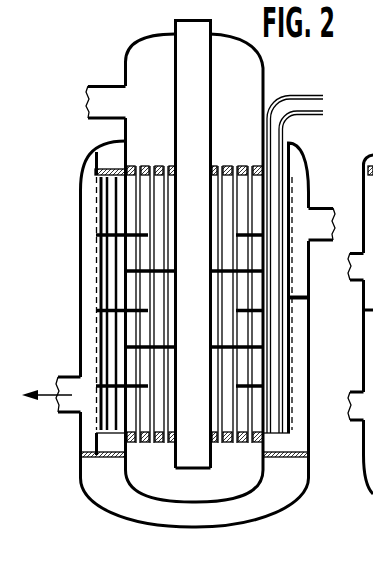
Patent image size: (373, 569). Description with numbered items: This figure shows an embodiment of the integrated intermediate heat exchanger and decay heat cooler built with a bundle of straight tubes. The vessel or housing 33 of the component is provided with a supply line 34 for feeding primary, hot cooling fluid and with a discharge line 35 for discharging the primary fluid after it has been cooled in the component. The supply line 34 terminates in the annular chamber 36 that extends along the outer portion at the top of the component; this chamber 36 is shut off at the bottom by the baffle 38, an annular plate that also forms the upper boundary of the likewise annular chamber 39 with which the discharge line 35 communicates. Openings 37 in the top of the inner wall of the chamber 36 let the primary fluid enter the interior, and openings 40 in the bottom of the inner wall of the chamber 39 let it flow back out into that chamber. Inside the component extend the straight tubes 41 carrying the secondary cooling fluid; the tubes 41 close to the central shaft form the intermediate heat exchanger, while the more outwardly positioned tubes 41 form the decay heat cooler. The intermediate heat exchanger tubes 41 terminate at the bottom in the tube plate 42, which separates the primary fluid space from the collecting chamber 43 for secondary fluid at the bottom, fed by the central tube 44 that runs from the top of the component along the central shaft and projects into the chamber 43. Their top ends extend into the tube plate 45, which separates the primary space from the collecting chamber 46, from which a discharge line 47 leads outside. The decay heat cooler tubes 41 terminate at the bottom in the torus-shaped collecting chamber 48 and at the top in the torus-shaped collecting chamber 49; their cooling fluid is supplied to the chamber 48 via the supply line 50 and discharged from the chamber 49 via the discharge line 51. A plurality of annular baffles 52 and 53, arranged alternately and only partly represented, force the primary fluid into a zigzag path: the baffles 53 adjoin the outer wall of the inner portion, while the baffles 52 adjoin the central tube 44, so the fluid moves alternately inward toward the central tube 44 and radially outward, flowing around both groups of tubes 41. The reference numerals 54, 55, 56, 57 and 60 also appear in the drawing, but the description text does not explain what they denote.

The vessel or housing 33 is at (86, 487).
The supply line 34 is at (323, 230).
The discharge line 35 is at (68, 384).
The annular chamber 36 is at (299, 171).
The openings 37 is at (95, 202).
The baffle 38 is at (298, 300).
The annular chamber 39 is at (300, 364).
The openings 40 is at (95, 415).
The straight tubes 41 is at (162, 265).
The tube plate 42 is at (146, 442).
The collecting chamber 43 is at (238, 490).
The central tube 44 is at (188, 461).
The tube plate 45 is at (123, 155).
The collecting chamber 46 is at (145, 62).
The discharge line 47 is at (105, 97).
The torus-shaped collecting chamber 48 is at (278, 443).
The torus-shaped collecting chamber 49 is at (108, 159).
The supply line 50 is at (317, 95).
The discharge line 51 is at (325, 110).
The annular baffles 52 is at (127, 347).
The annular baffles 53 is at (121, 307).
The second vessel 54 is at (362, 540).
The nozzle 55 is at (355, 275).
The nozzle 56 is at (355, 422).
The connection 57 is at (372, 345).
The adjacent vessel wall 60 is at (372, 233).